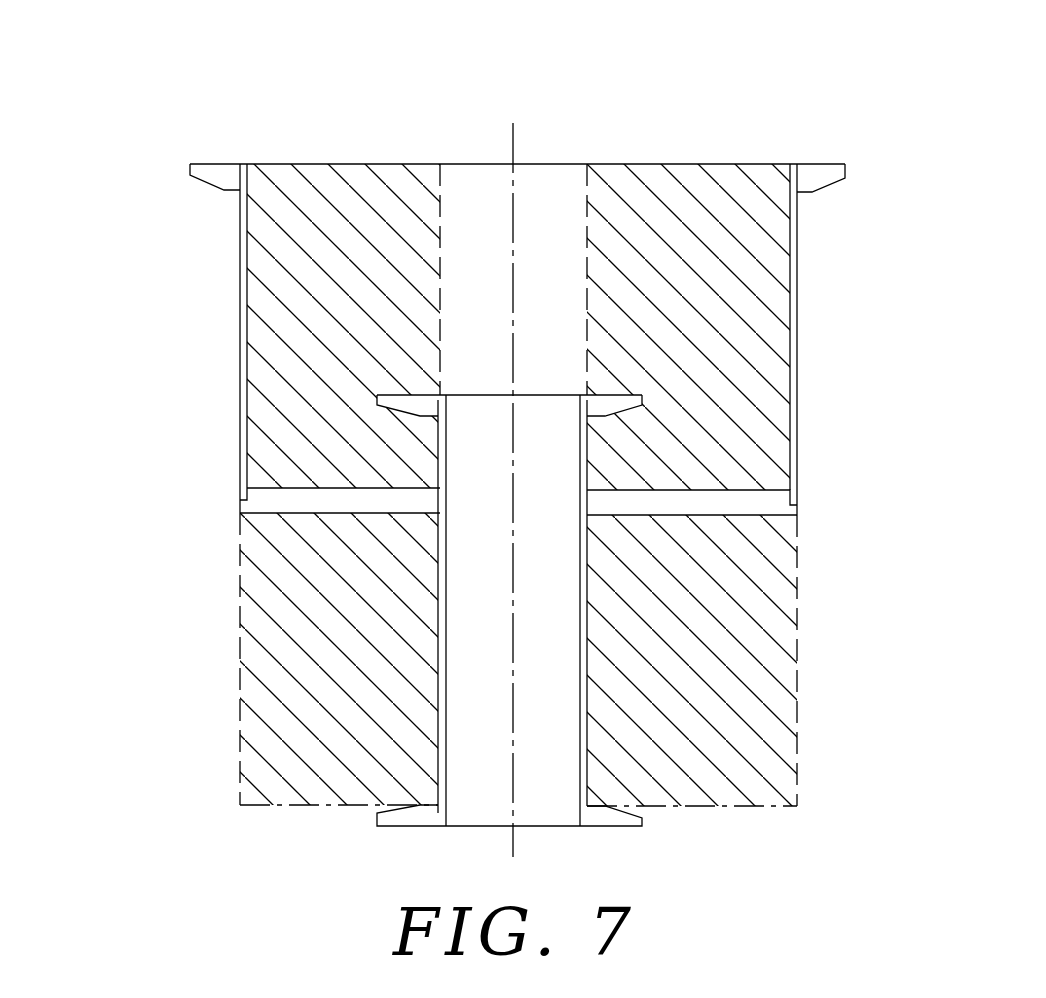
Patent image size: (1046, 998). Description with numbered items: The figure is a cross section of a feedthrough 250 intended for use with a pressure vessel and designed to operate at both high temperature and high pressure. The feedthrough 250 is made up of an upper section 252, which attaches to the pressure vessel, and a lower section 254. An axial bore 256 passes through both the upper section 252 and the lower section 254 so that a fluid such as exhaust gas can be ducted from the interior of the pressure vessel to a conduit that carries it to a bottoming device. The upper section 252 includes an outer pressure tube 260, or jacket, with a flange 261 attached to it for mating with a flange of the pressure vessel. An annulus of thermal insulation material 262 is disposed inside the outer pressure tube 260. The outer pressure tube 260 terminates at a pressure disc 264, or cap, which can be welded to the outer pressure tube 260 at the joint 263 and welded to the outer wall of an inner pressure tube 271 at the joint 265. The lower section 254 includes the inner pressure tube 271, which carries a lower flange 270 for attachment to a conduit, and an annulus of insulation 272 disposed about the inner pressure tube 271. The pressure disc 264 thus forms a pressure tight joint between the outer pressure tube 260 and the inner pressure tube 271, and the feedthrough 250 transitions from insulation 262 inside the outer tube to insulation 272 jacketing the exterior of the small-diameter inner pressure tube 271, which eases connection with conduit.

The feedthrough 250 is at (460, 68).
The upper section 252 is at (207, 297).
The lower section 254 is at (193, 637).
The axial bore 256 is at (552, 177).
The outer pressure tube 260 is at (797, 295).
The flange 261 is at (845, 178).
The thermal insulation material 262 is at (287, 180).
The joint 263 is at (247, 488).
The pressure disc 264 is at (760, 507).
The joint 265 is at (580, 500).
The lower flange 270 is at (543, 834).
The inner pressure tube 271 is at (582, 607).
The insulation 272 is at (770, 743).